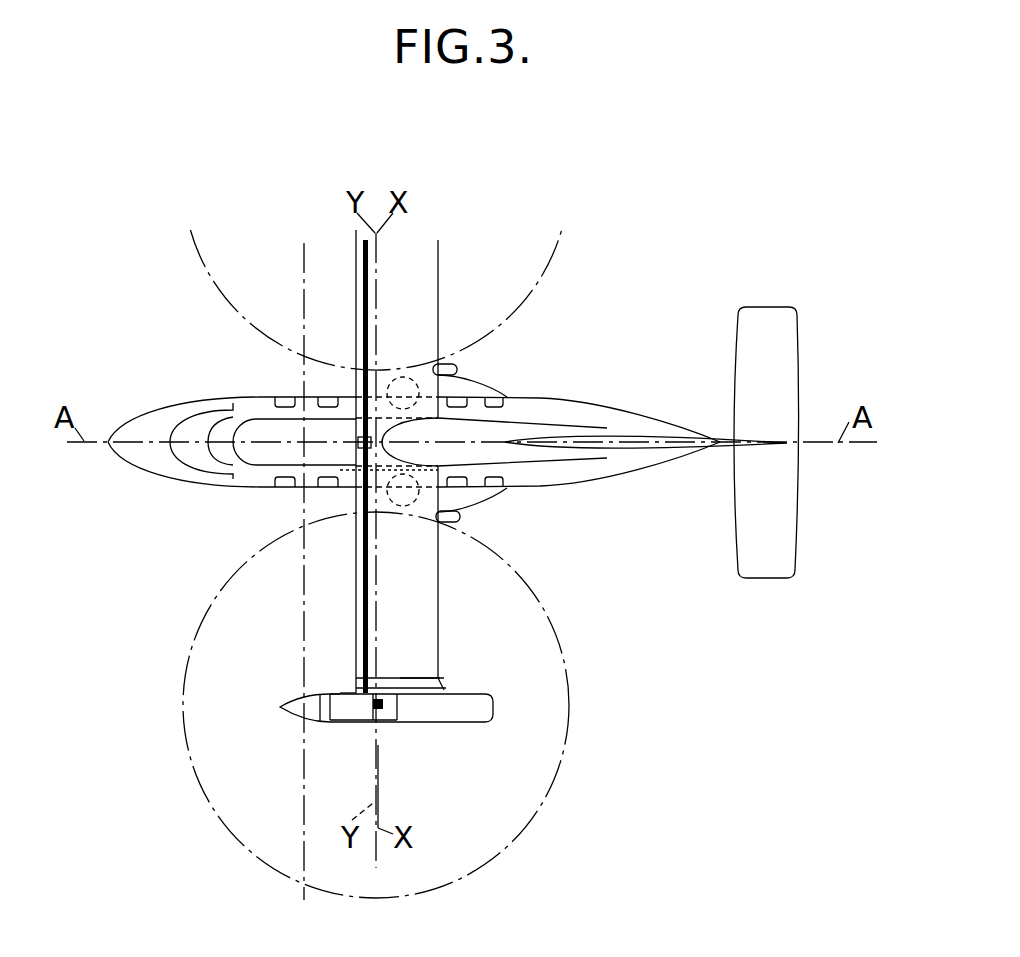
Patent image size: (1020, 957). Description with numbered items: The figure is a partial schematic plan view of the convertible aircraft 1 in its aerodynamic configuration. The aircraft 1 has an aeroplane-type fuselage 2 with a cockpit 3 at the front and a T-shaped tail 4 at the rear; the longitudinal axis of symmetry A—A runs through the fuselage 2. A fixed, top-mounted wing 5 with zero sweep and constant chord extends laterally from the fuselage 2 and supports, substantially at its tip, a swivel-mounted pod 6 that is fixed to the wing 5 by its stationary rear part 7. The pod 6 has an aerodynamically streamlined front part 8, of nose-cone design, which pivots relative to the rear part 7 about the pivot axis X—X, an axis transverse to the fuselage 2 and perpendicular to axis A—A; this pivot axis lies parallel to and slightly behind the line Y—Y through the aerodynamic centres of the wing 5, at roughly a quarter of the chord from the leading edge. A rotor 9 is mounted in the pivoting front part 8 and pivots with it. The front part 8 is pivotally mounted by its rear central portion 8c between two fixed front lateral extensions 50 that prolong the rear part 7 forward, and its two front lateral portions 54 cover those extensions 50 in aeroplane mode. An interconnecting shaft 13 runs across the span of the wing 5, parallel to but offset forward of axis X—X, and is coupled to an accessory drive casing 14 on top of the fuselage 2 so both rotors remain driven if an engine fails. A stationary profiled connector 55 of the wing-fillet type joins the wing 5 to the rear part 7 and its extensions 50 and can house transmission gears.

The convertible aircraft 1 is at (175, 572).
The fuselage 2 is at (543, 400).
The cockpit 3 is at (157, 422).
The tail 4 is at (745, 510).
The wing 5 is at (425, 287).
The pod 6 is at (418, 724).
The rear part of the pod 7 is at (470, 700).
The front part of the pod 8 is at (340, 707).
The rear central portion 8c is at (363, 710).
The rotor 9 is at (297, 762).
The interconnecting shaft 13 is at (363, 288).
The accessory drive casing 14 is at (357, 447).
The front lateral extension 50 is at (347, 690).
The front lateral portion 54 is at (340, 692).
The connector 55 is at (417, 682).